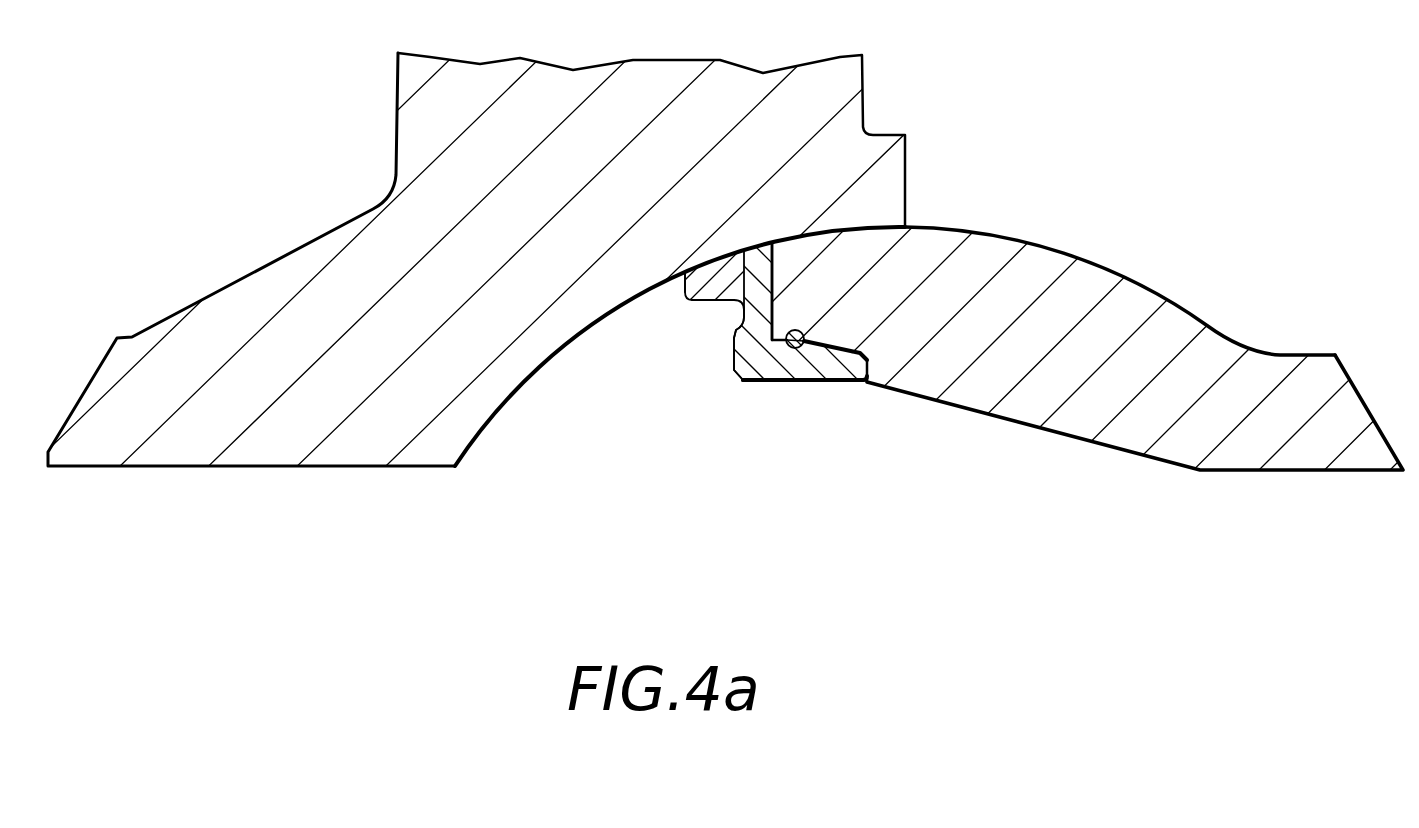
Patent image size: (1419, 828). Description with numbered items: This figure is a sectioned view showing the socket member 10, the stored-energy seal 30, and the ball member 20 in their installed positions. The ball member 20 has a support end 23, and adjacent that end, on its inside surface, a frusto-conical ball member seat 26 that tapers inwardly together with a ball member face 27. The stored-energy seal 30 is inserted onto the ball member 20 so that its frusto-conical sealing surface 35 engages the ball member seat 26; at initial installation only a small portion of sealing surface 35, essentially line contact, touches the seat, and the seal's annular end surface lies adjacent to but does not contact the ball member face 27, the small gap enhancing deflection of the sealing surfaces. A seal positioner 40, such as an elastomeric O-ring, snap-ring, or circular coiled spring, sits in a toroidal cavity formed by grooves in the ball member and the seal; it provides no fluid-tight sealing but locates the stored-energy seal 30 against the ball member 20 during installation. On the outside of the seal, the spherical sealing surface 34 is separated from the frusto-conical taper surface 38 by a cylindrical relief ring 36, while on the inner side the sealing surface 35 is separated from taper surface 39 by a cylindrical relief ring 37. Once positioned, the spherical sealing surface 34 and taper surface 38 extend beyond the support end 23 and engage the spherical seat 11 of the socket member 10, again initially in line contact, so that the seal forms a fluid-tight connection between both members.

The socket member 10 is at (233, 274).
The spherical seat 11 is at (542, 380).
The ball member 20 is at (1200, 300).
The support end 23 is at (742, 317).
The ball member seat 26 is at (826, 348).
The ball member face 27 is at (845, 382).
The stored-energy seal 30 is at (733, 386).
The spherical sealing surface 34 is at (692, 267).
The sealing surface 35 is at (867, 350).
The cylindrical relief ring 36 is at (713, 260).
The cylindrical relief ring 37 is at (845, 335).
The taper surface 38 is at (747, 252).
The taper surface 39 is at (835, 346).
The seal positioner 40 is at (794, 349).